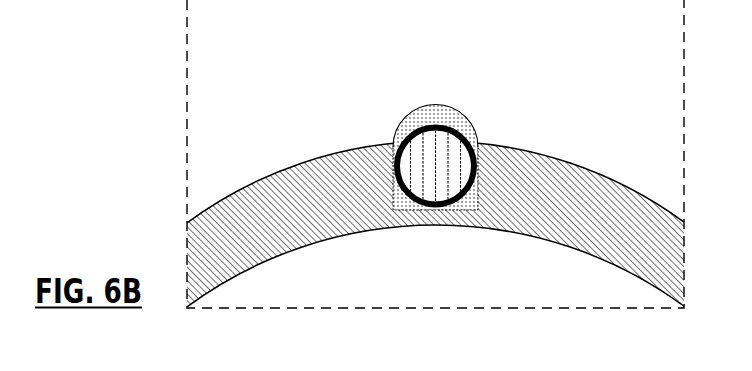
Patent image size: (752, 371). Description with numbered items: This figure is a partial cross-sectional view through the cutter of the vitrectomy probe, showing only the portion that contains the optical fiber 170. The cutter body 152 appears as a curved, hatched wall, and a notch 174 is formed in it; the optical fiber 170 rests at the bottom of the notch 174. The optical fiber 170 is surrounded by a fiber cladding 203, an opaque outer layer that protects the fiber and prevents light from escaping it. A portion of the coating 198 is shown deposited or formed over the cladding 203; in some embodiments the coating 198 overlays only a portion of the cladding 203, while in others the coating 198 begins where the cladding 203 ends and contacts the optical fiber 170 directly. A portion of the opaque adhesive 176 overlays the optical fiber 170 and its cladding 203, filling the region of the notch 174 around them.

The annular body 152 is at (638, 193).
The optical fiber 170 is at (418, 152).
The notch 174 is at (477, 214).
The opaque adhesive 176 is at (451, 113).
The coating 198 is at (407, 121).
The fiber cladding 203 is at (460, 146).